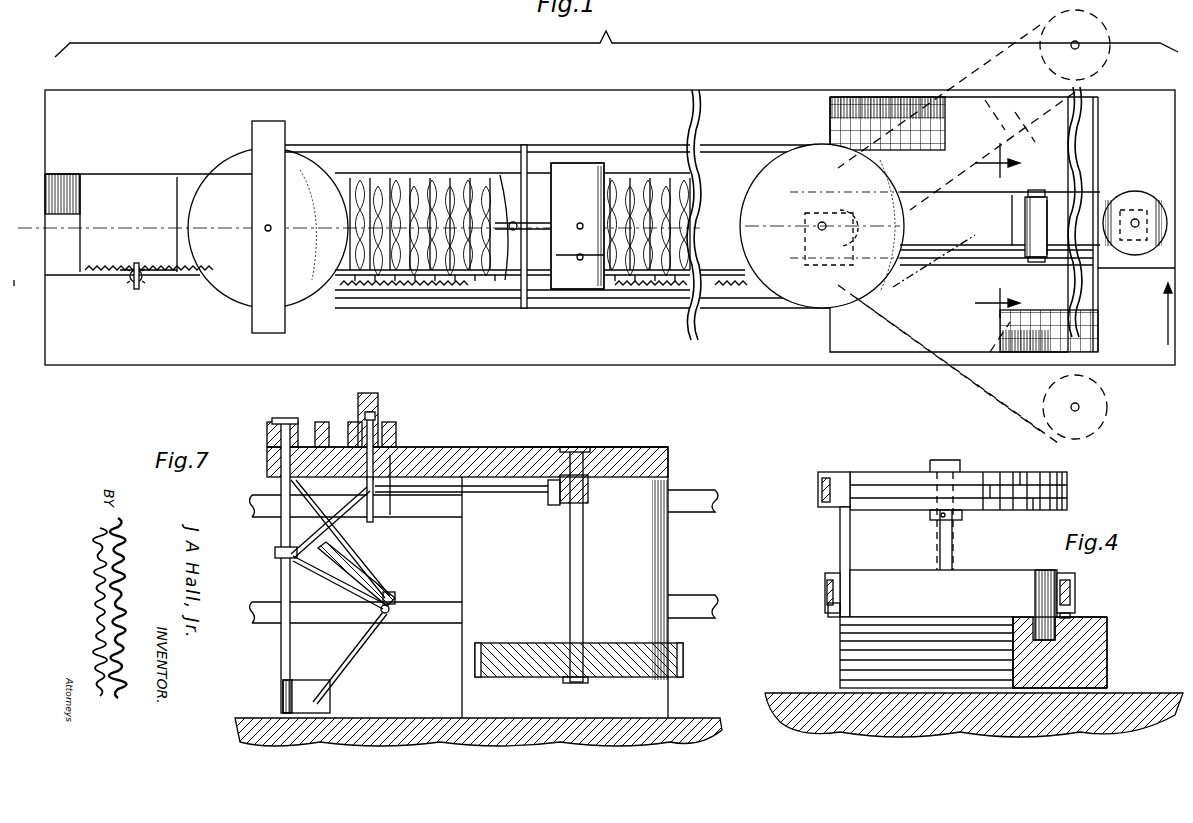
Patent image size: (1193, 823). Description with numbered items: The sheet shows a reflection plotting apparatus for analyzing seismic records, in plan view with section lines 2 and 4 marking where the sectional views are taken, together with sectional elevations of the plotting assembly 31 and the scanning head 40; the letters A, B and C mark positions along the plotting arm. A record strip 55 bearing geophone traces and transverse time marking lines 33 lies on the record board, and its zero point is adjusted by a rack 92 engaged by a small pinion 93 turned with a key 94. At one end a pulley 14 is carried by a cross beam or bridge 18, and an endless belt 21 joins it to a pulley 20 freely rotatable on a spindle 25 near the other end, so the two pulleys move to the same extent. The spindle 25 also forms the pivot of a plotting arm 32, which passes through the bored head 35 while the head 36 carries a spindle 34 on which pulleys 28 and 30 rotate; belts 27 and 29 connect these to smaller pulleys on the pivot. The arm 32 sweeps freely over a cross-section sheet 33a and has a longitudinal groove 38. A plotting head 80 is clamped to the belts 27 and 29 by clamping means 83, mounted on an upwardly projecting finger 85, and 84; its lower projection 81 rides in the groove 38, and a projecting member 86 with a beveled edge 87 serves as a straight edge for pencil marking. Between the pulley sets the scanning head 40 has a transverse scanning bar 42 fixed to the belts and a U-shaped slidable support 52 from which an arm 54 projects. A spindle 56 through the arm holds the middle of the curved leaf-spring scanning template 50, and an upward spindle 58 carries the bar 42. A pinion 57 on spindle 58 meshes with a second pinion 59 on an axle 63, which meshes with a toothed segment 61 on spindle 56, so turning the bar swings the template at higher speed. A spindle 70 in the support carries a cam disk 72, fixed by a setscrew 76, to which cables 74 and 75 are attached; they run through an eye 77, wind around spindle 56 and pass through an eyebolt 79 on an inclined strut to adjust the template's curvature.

In FIG. 1, the section line 2- 2 is at (31, 192).
In FIG. 1, the section line 4- 4 is at (987, 229).
In FIG. 1, the pulley 14 is at (232, 288).
In FIG. 1, the cross beam or bridge 18 is at (275, 330).
In FIG. 1, the pulley 20 is at (816, 299).
In FIG. 1, the endless belt, cord or cable 21 is at (440, 306).
In FIG. 1, the spindle or axle 25 is at (821, 223).
In FIG. 4, the endless belt, cord or cable 27 is at (1068, 490).
In FIG. 1, the pulley 28 is at (1156, 246).
In FIG. 4, the pulley 28 is at (966, 484).
In FIG. 4, the endless belt, cord or cable 29 is at (825, 595).
In FIG. 4, the pulley 30 is at (830, 612).
In FIG. 1, the plotting assembly 31 is at (1104, 185).
In FIG. 1, the plotting arm 32 is at (938, 256).
In FIG. 4, the plotting arm 32 is at (1085, 622).
In FIG. 1, the transverse time marking lines 33 is at (660, 182).
In FIG. 1, the cross-section sheet 33a is at (890, 112).
In FIG. 1, the spindle 34 is at (1135, 222).
In FIG. 1, the laterally projecting head 35 is at (796, 228).
In FIG. 1, the laterally projecting head 36 is at (1136, 212).
In FIG. 1, the longitudinal groove 38 is at (1060, 250).
In FIG. 4, the longitudinal groove 38 is at (1090, 640).
In FIG. 1, the scanning head 40 is at (571, 162).
In FIG. 7, the scanning head 40 is at (546, 447).
In FIG. 1, the transverse scanning bar 42 is at (526, 160).
In FIG. 7, the transverse scanning bar 42 is at (378, 404).
In FIG. 7, the scanning template 50 is at (330, 700).
In FIG. 1, the U-shaped slidable support 52 is at (596, 291).
In FIG. 7, the U-shaped slidable support 52 is at (666, 465).
In FIG. 1, the arm 54 is at (536, 223).
In FIG. 7, the arm 54 is at (447, 441).
In FIG. 1, the record strip 55 is at (412, 185).
In FIG. 7, the record strip 55 is at (522, 718).
In FIG. 4, the record strip 55 is at (790, 693).
In FIG. 7, the spindle 56 is at (295, 666).
In FIG. 7, the toothed pinion 57 is at (393, 437).
In FIG. 7, the spindle 58 is at (374, 437).
In FIG. 7, the second pinion 59 is at (338, 427).
In FIG. 7, the toothed segment 61 is at (300, 420).
In FIG. 7, the axle 63 is at (321, 488).
In FIG. 7, the spindle 70 is at (568, 566).
In FIG. 7, the cam disk 72 is at (560, 506).
In FIG. 7, the cable 74 is at (341, 537).
In FIG. 7, the cable 75 is at (357, 662).
In FIG. 7, the setscrew 76 is at (546, 494).
In FIG. 7, the eye 77 is at (387, 498).
In FIG. 7, the eyebolt 79 is at (392, 605).
In FIG. 1, the plotting head 80 is at (1036, 193).
In FIG. 4, the plotting head 80 is at (1018, 578).
In FIG. 7, the feather, tooth or projection 81 is at (372, 573).
In FIG. 4, the feather, tooth or projection 81 is at (1035, 627).
In FIG. 4, the clamping means 83 is at (818, 490).
In FIG. 4, the clamping means 84 is at (1075, 595).
In FIG. 4, the finger 85 is at (848, 560).
In FIG. 4, the projecting member 86 is at (890, 650).
In FIG. 4, the beveled edge 87 is at (1015, 680).
In FIG. 1, the rack 92 is at (155, 279).
In FIG. 1, the pinion 93 is at (128, 283).
In FIG. 1, the key 94 is at (136, 283).
In FIG. 1, the position A is at (1046, 231).
In FIG. 1, the position B is at (1012, 211).
In FIG. 1, the position C is at (948, 272).
In FIG. 4, the position C is at (1107, 667).